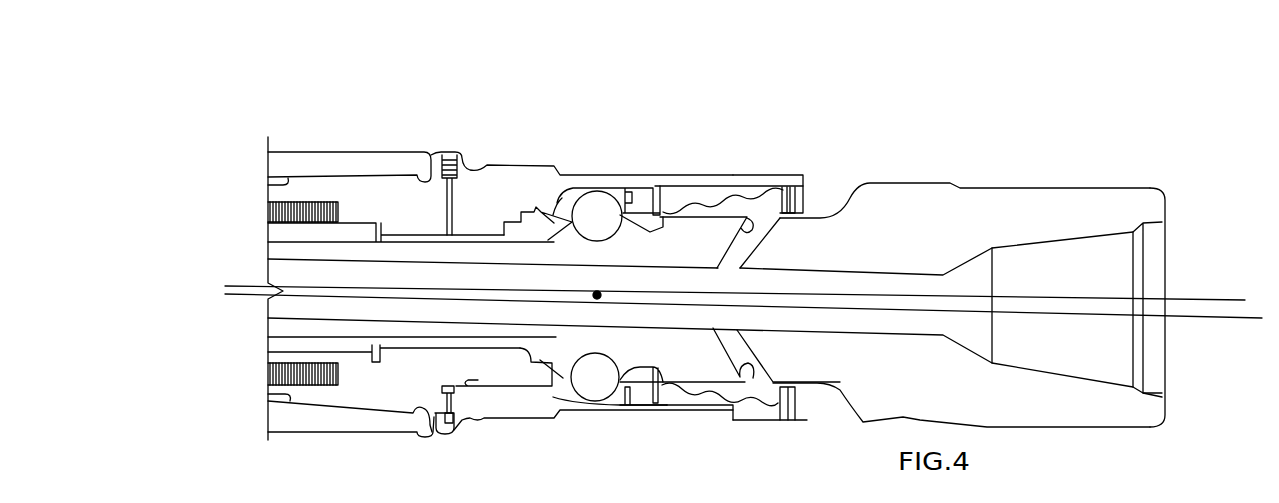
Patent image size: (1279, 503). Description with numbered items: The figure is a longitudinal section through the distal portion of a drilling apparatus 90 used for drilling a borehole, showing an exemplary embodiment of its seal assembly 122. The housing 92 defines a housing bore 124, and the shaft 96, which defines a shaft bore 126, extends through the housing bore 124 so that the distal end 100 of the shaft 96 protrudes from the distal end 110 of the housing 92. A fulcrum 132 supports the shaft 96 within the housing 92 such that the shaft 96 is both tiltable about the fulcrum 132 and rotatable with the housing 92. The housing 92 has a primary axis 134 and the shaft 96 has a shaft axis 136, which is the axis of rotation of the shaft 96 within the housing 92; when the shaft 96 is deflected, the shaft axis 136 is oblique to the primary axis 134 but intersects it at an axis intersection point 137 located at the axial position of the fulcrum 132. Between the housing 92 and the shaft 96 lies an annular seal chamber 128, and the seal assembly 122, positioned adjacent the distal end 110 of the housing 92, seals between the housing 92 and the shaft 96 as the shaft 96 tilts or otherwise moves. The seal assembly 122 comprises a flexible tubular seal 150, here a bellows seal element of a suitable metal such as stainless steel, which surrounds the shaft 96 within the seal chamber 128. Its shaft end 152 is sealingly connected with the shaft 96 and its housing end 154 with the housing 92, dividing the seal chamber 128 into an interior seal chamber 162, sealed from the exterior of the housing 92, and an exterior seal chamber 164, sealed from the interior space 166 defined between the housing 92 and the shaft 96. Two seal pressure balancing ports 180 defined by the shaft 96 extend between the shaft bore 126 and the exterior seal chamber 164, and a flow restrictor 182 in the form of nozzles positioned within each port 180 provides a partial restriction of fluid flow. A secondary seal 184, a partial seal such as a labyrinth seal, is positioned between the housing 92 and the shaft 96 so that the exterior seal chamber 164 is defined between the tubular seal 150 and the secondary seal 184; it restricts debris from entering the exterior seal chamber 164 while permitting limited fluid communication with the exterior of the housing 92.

The drilling apparatus 90 is at (195, 130).
The housing 92 is at (301, 163).
The shaft 96 is at (1117, 198).
The distal end of the shaft 100 is at (1165, 425).
The distal end of the housing 110 is at (803, 420).
The seal assembly 122 is at (717, 81).
The housing bore 124 is at (476, 240).
The shaft bore 126 is at (915, 288).
The annular seal chamber 128 is at (668, 196).
The fulcrum 132 is at (602, 72).
The primary axis 134 is at (1215, 318).
The shaft axis 136 is at (1225, 300).
The axis intersection point 137 is at (594, 303).
The tubular seal 150 is at (717, 198).
The shaft end 152 is at (657, 405).
The housing end 154 is at (785, 186).
The interior seal chamber 162 is at (688, 197).
The exterior seal chamber 164 is at (762, 400).
The interior space 166 is at (501, 348).
The seal pressure balancing port 180 is at (710, 330).
The flow restrictor 182 is at (738, 335).
The secondary seal 184 is at (800, 203).